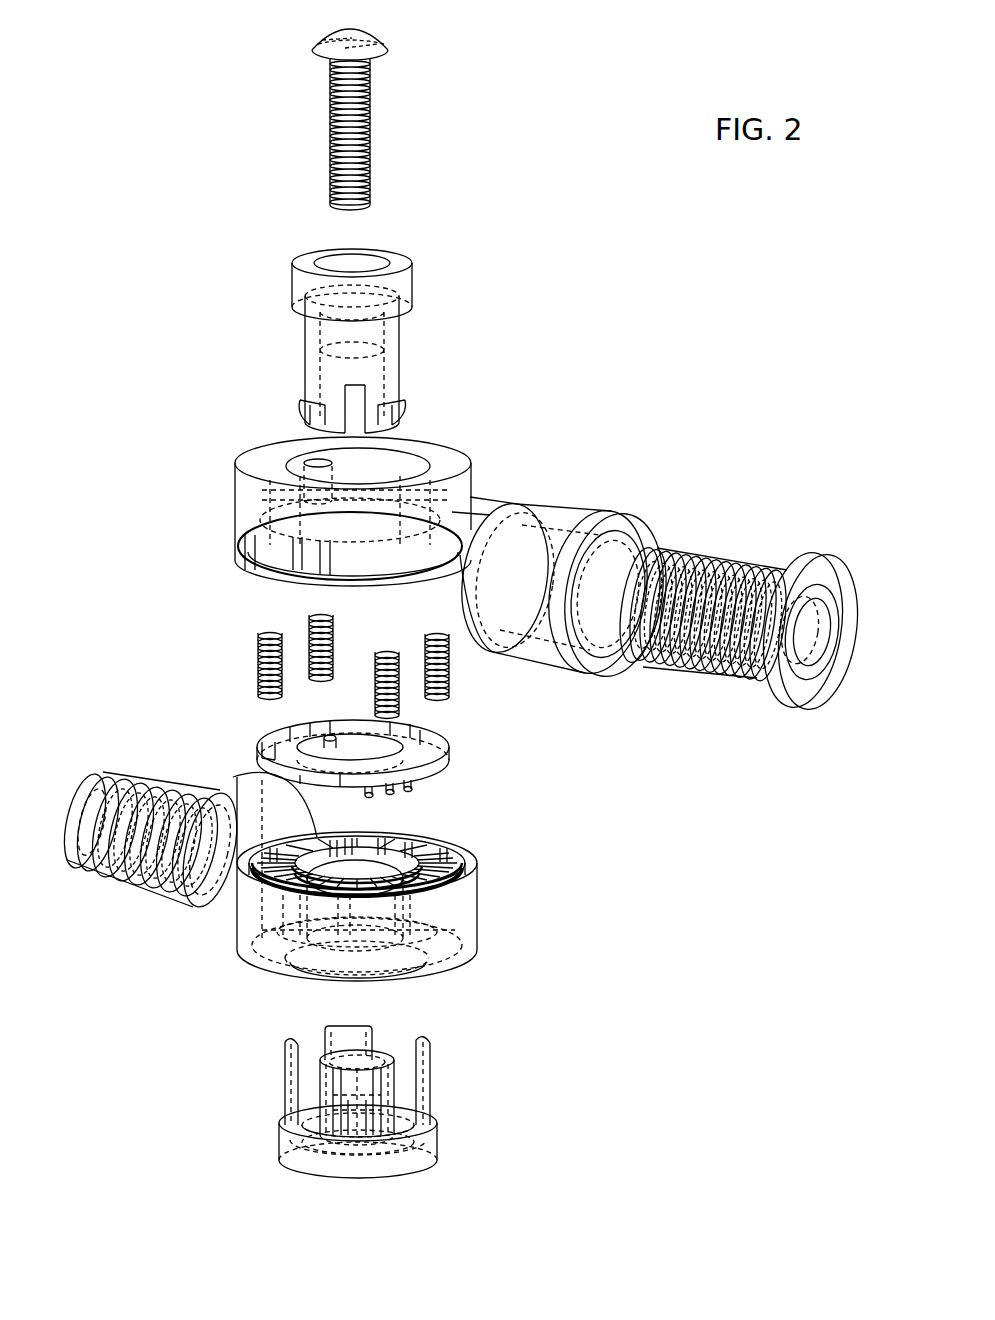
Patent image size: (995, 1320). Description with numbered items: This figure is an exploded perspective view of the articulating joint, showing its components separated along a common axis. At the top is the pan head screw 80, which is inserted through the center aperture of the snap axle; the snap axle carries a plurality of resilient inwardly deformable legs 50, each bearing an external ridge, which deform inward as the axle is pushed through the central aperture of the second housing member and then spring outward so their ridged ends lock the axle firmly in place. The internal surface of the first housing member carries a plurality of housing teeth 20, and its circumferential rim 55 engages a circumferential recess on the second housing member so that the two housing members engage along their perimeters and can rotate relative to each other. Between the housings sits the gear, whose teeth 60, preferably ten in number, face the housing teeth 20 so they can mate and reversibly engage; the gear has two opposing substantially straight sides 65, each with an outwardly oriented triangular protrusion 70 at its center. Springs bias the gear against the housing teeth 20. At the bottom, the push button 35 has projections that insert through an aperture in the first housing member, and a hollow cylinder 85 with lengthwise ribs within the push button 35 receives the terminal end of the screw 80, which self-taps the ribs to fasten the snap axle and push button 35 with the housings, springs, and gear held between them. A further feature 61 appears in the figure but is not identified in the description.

The pan head screw 80 is at (373, 25).
The resilient inwardly deformable legs 50 is at (403, 422).
The substantially straight sides 65 is at (427, 733).
The teeth 60 is at (417, 805).
The triangular protrusion 70 is at (330, 738).
The notch 61 is at (262, 742).
The housing teeth 20 is at (478, 831).
The circumferential rim 55 is at (470, 835).
The push button 35 is at (367, 1180).
The hollow cylinder 85 is at (390, 1053).